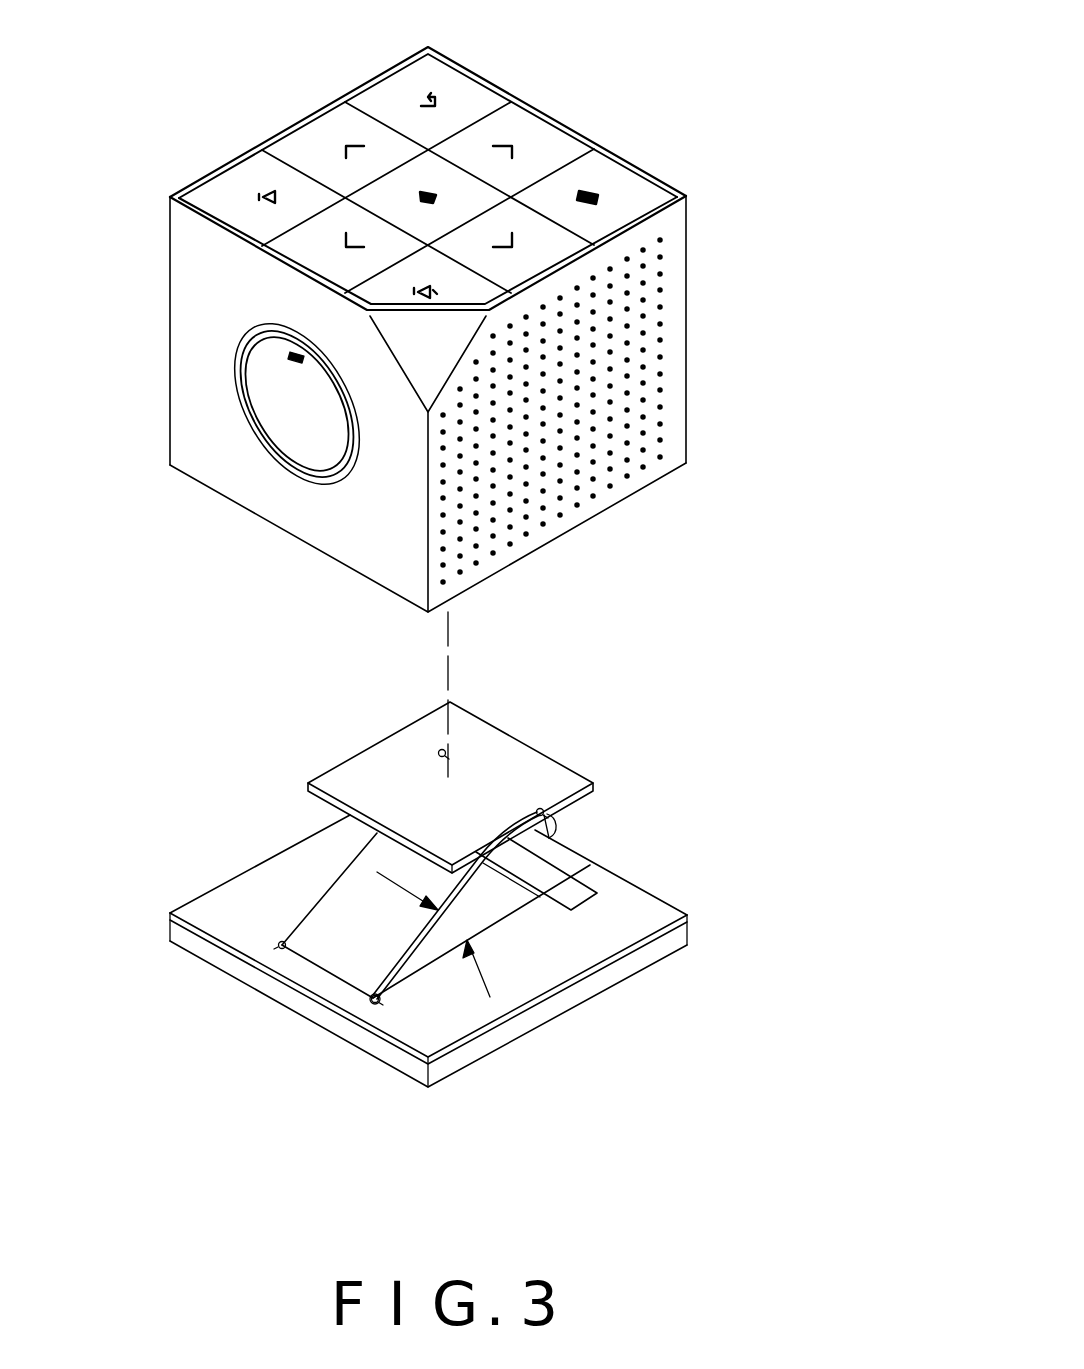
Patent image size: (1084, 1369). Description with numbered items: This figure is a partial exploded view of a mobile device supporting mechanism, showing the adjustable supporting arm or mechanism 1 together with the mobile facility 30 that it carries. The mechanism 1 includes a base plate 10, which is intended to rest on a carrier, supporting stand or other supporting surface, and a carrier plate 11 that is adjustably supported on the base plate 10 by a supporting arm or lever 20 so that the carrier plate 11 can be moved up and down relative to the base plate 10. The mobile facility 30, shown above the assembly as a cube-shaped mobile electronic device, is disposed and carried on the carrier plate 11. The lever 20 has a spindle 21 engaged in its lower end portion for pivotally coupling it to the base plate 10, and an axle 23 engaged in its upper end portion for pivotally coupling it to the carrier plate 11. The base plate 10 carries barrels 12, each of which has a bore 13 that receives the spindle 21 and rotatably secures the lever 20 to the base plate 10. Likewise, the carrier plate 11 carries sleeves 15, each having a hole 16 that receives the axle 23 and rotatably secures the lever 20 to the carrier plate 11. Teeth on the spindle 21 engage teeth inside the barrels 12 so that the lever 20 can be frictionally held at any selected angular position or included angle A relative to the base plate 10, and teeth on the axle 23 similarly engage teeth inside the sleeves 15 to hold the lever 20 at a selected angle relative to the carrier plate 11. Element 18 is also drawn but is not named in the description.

The adjustable supporting arm or mechanism 1 is at (668, 705).
The base plate 10 is at (645, 950).
The carrier plate 11 is at (493, 740).
The barrels 12 is at (372, 1001).
The bore 13 is at (377, 1004).
The sleeves 15 is at (541, 808).
The hole 16 is at (556, 817).
The slot 18 is at (500, 893).
The lever 20 is at (350, 908).
The spindle 21 is at (283, 949).
The axle 23 is at (445, 750).
The mobile facility 30 is at (535, 137).
The included angle A is at (460, 923).